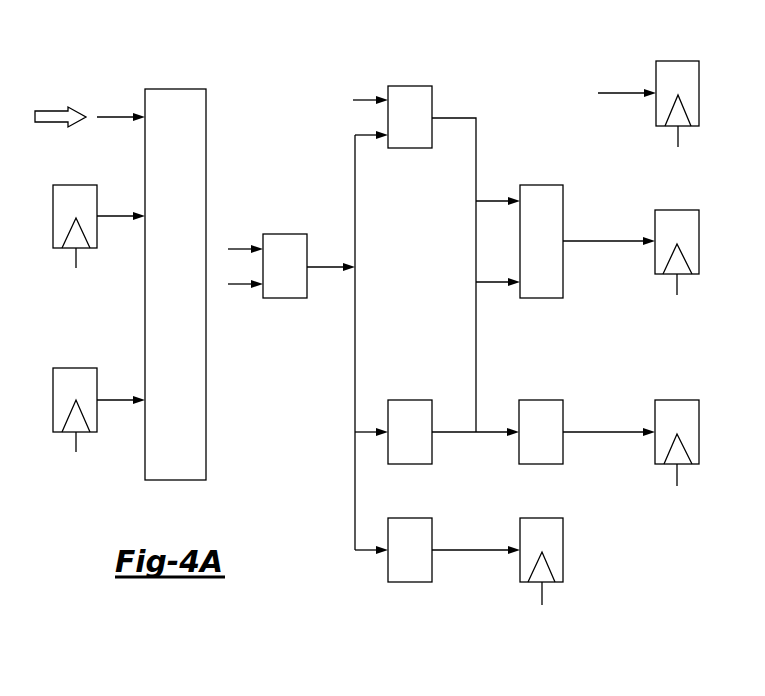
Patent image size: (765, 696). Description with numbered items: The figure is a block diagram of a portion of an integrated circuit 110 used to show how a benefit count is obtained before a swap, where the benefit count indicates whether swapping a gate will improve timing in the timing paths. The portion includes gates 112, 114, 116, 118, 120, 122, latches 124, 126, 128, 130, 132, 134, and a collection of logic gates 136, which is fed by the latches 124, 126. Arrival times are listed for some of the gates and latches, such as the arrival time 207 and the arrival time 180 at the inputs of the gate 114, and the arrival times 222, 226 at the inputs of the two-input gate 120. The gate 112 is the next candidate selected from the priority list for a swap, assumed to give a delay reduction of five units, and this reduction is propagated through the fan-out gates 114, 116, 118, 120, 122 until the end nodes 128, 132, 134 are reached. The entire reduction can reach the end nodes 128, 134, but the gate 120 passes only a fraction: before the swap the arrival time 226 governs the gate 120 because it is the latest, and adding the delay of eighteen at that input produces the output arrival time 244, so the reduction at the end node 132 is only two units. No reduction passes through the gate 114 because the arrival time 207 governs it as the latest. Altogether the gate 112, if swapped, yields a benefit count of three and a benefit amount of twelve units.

The portion of an integrated circuit 110 is at (485, 70).
The gate 112 is at (285, 234).
The gate 114 is at (410, 86).
The gate 116 is at (410, 400).
The gate 118 is at (410, 518).
The 2-input gate 120 is at (541, 185).
The gate 122 is at (543, 400).
The latch 124 is at (76, 185).
The latch 126 is at (76, 368).
The latch 128 is at (543, 518).
The latch 130 is at (677, 61).
The latch 132 is at (677, 210).
The latch 134 is at (678, 400).
The collection of logic gates 136 is at (177, 89).
The arrival time 180 is at (355, 337).
The arrival time 207 is at (355, 100).
The arrival time 222 is at (482, 203).
The arrival time 226 is at (482, 281).
The arrival time 244 is at (609, 228).